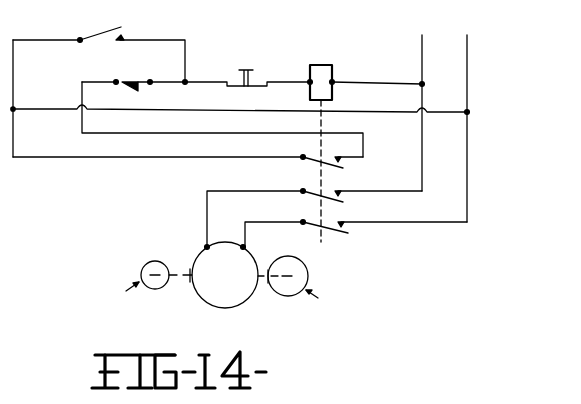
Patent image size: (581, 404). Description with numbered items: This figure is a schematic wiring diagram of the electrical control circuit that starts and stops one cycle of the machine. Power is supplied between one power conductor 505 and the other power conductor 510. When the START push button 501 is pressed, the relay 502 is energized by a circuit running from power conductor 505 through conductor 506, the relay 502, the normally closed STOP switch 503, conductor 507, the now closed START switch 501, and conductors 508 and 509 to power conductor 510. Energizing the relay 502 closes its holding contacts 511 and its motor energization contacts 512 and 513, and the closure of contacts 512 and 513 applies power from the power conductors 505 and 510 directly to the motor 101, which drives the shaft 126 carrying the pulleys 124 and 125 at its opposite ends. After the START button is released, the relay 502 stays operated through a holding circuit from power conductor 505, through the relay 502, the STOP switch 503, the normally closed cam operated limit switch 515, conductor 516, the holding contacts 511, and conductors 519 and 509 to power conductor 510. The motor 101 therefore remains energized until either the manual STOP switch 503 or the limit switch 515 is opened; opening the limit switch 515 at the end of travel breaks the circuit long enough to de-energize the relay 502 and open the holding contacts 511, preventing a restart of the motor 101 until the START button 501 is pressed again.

The START push button 501 is at (120, 26).
The conductor 507 is at (166, 39).
The conductor 508 is at (13, 80).
The cam operated limit switch 515 is at (151, 80).
The STOP switch 503 is at (257, 81).
The relay 502 is at (327, 71).
The conductor 506 is at (355, 82).
The power conductor 505 is at (421, 36).
The power conductor 510 is at (468, 40).
The conductor 509 is at (183, 110).
The conductor 516 is at (134, 137).
The conductor 519 is at (93, 159).
The holding contacts 511 is at (307, 162).
The motor energization contacts 512 is at (310, 197).
The motor energization contacts 513 is at (310, 228).
The motor 101 is at (209, 304).
The shaft 126 is at (186, 268).
The pulley 125 is at (141, 271).
The pulley 124 is at (307, 273).